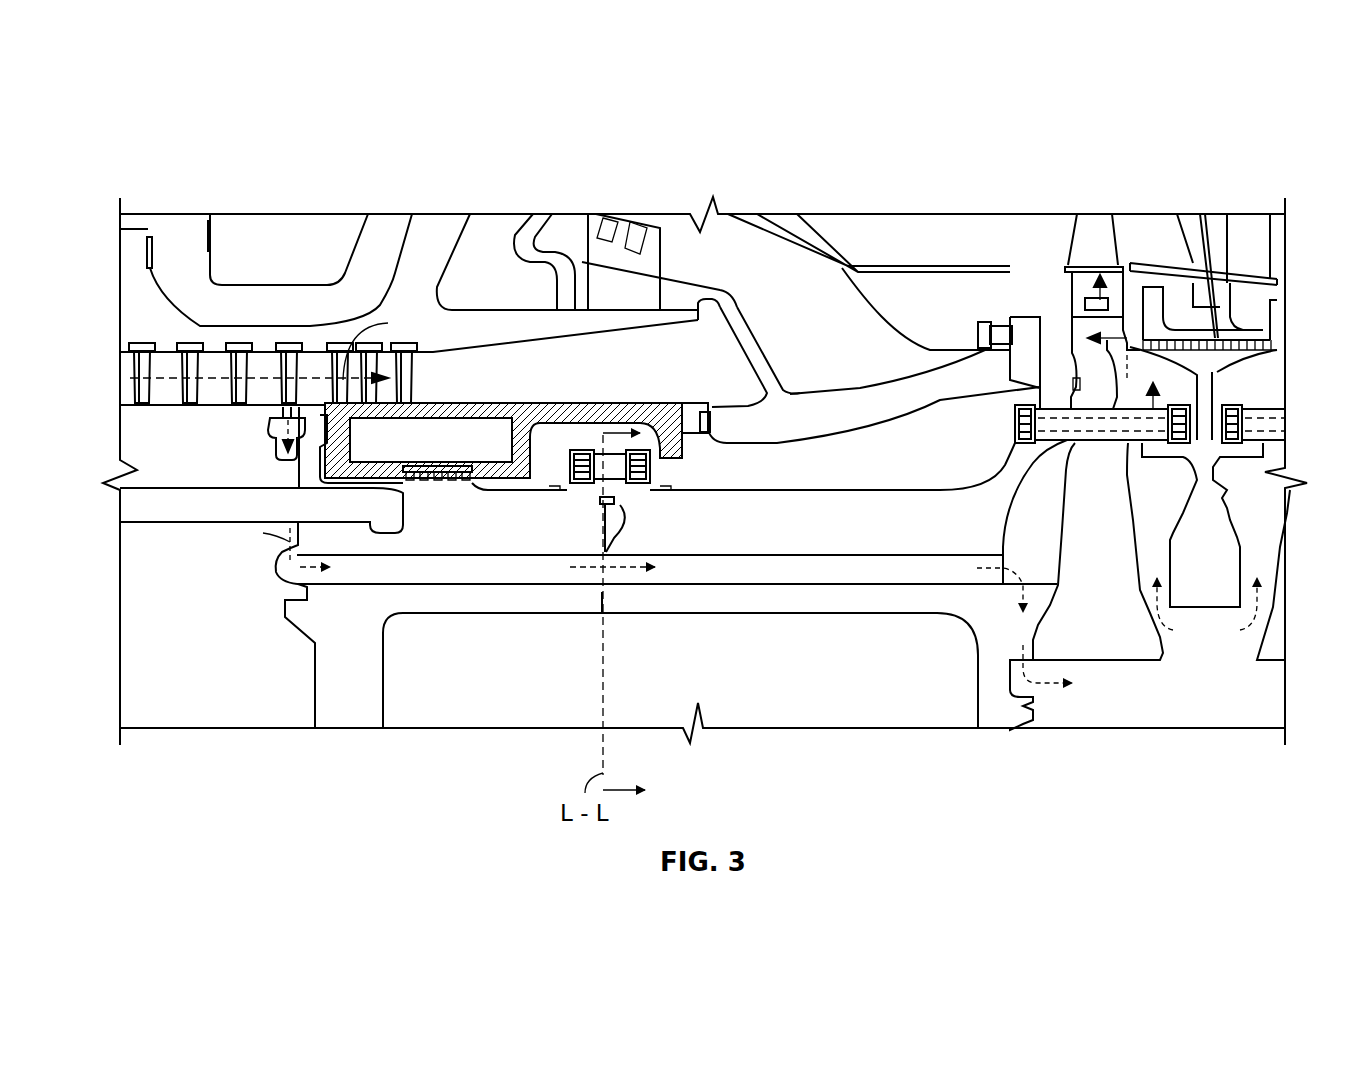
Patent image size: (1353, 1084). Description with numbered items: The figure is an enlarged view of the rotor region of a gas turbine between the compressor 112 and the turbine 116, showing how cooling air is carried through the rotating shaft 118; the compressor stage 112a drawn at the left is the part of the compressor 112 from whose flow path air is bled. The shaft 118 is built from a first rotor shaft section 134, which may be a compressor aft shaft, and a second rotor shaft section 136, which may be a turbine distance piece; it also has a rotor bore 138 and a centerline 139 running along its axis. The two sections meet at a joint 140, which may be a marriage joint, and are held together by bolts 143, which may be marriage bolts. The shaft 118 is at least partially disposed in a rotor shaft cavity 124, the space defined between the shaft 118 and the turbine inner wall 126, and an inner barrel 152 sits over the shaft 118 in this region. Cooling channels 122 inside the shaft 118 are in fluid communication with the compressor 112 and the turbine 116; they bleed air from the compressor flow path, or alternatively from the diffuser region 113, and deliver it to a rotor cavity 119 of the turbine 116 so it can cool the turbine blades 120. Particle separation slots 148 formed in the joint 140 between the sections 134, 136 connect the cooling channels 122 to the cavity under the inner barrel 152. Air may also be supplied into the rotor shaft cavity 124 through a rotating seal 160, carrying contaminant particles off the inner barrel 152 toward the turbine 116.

The compressor 112 is at (118, 545).
The compressor section 112a is at (167, 368).
The diffuser region 113 is at (650, 376).
The turbine 116 is at (1287, 388).
The shaft 118 is at (815, 490).
The rotor cavity 119 is at (1185, 704).
The turbine blades 120 is at (1120, 228).
The cooling channels 122 is at (712, 553).
The rotor shaft cavity 124 is at (762, 489).
The turbine inner wall 126 is at (918, 443).
The first rotor shaft section 134 is at (459, 544).
The second rotor shaft section 136 is at (899, 537).
The rotor bore 138 is at (810, 669).
The centerline 139 is at (843, 726).
The joint 140 is at (618, 547).
The bolts 143 is at (608, 462).
The particle separation slots 148 is at (607, 507).
The inner barrel 152 is at (497, 403).
The rotating seal 160 is at (445, 466).